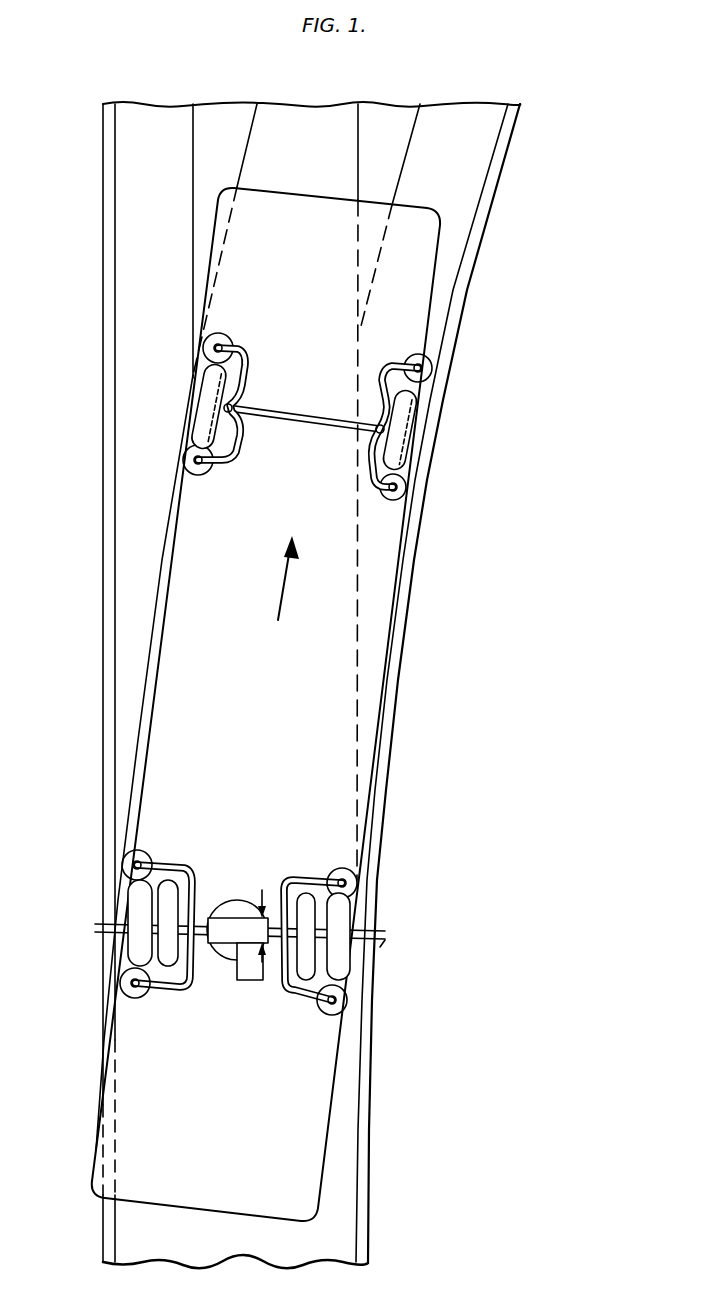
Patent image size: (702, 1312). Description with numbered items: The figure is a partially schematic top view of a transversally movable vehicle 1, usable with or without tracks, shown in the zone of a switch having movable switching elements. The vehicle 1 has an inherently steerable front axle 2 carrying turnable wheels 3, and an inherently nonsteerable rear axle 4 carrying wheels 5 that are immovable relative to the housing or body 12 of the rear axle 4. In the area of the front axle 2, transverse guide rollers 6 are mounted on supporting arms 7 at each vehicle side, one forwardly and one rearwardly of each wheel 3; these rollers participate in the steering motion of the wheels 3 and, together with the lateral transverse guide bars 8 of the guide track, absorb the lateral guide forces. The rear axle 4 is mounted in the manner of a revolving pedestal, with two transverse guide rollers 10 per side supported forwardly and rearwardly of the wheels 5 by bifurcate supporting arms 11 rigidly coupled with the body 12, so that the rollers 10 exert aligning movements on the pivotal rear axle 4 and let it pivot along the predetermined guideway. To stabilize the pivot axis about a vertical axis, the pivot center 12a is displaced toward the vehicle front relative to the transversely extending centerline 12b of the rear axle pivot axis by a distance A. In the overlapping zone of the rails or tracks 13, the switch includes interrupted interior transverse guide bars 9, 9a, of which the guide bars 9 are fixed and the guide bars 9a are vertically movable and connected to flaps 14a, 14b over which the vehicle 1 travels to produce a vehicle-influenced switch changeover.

The vehicle 1 is at (148, 640).
The front axle 2 is at (418, 436).
The wheels 3 is at (208, 390).
The rear axle 4 is at (128, 949).
The wheels 5 is at (166, 915).
The transverse guide rollers 6 is at (226, 335).
The supporting arms 7 is at (233, 438).
The lateral transverse guide bars 8 is at (483, 190).
The transverse guide bars 9 is at (352, 165).
The transverse guide bars 9a is at (150, 688).
The transverse guide rollers 10 is at (128, 861).
The bifurcate supporting arms 11 is at (165, 990).
The housing or body 12 is at (201, 910).
The pivot center 12a is at (237, 903).
The centerline 12b is at (378, 947).
The rails or tracks 13 is at (333, 1240).
The flap 14a is at (125, 419).
The flap 14b is at (455, 218).
The distance A is at (267, 895).